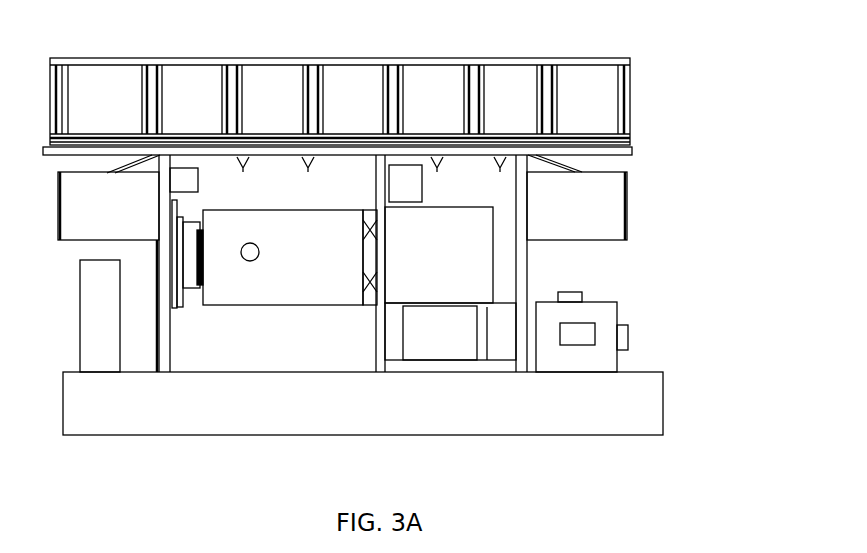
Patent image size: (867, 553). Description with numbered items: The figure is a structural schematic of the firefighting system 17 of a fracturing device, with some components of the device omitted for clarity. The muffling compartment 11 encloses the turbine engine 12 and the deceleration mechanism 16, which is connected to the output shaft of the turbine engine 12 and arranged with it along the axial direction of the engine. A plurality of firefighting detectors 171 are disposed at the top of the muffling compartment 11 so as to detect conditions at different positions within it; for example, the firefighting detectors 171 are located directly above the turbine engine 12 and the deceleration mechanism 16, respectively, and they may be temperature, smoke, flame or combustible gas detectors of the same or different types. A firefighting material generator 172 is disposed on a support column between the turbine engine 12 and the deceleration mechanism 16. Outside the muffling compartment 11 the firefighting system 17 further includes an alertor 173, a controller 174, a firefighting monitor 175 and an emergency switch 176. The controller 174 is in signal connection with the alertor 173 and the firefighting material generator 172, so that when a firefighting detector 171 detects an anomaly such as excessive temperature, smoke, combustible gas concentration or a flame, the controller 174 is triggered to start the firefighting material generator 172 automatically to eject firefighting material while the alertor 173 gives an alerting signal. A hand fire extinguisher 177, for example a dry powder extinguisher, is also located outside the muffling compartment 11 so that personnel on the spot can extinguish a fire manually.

The muffling compartment 11 is at (363, 379).
The turbine engine 12 is at (283, 257).
The deceleration mechanism 16 is at (439, 255).
The firefighting system 17 is at (654, 198).
The firefighting detector 171 is at (242, 160).
The firefighting material generator 172 is at (404, 203).
The alertor 173 is at (575, 287).
The controller 174 is at (601, 307).
The firefighting monitor 175 is at (594, 327).
The emergency switch 176 is at (621, 347).
The hand fire extinguisher 177 is at (92, 356).